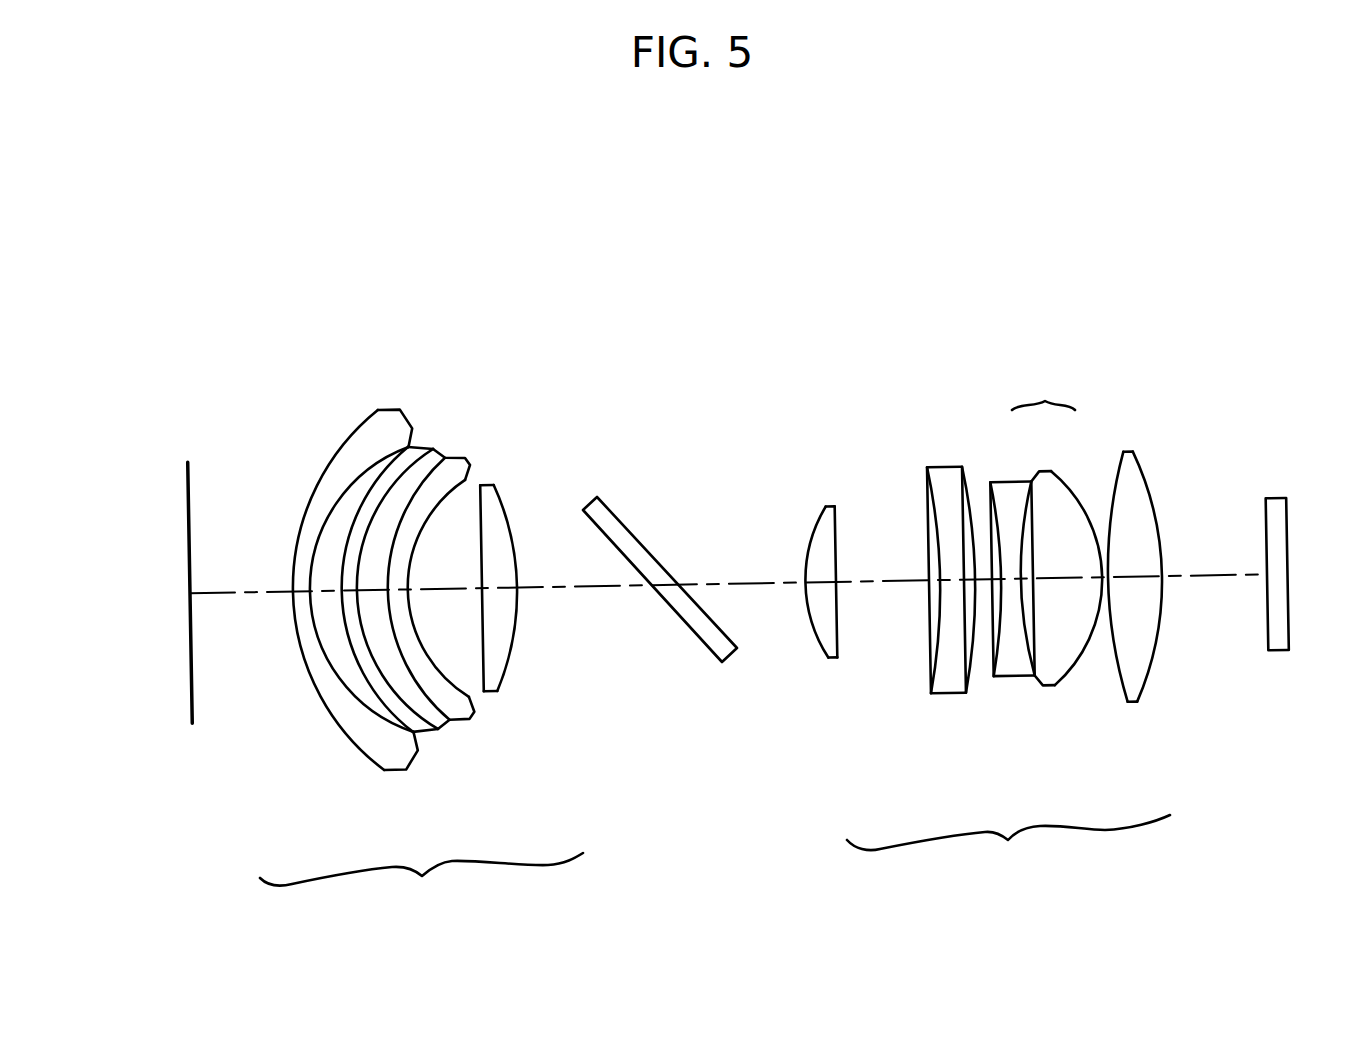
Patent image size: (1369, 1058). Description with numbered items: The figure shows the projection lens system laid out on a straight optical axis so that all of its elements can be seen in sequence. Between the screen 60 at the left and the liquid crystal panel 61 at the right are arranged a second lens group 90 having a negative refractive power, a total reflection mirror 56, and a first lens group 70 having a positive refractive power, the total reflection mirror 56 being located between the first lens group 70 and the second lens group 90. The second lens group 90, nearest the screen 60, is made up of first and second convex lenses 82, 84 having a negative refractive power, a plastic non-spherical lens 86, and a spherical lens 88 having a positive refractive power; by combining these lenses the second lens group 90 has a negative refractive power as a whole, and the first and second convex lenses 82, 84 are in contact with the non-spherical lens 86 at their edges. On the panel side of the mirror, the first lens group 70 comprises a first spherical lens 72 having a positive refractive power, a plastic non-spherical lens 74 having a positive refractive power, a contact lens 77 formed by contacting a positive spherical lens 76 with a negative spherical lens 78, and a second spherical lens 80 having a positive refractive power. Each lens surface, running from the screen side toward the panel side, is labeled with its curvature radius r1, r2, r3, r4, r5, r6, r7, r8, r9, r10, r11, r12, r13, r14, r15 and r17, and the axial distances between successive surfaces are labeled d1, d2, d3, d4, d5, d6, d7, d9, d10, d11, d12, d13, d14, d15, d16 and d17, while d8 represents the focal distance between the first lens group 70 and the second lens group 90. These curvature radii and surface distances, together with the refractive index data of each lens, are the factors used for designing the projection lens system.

The screen 60 is at (187, 522).
The liquid crystal panel 61 is at (1278, 507).
The total reflection mirror 56 is at (638, 532).
The second lens group 90 is at (405, 636).
The first lens group 70 is at (991, 611).
The first convex lens 82 is at (323, 578).
The second convex lens 84 is at (390, 582).
The plastic non-spherical lens 86 is at (445, 580).
The spherical lens 88 is at (529, 547).
The first spherical lens 72 is at (790, 527).
The plastic non-spherical lens 74 is at (909, 589).
The positive spherical lens 76 is at (965, 520).
The contact lens 77 is at (1017, 512).
The negative spherical lens 78 is at (1085, 512).
The second spherical lens 80 is at (1173, 538).
The curvature radius r1 is at (317, 490).
The curvature radius r2 is at (343, 488).
The curvature radius r3 is at (370, 480).
The curvature radius r4 is at (404, 470).
The curvature radius r5 is at (428, 448).
The curvature radius r6 is at (463, 478).
The curvature radius r7 is at (490, 487).
The curvature radius r8 is at (507, 513).
The curvature radius r9 is at (810, 507).
The curvature radius r10 is at (827, 503).
The curvature radius r11 is at (927, 485).
The curvature radius r12 is at (970, 548).
The curvature radius r13 is at (992, 525).
The curvature radius r14 is at (997, 468).
The curvature radius r15 is at (1100, 565).
The curvature radius r17 is at (1128, 480).
The distance between lens surfaces d1 is at (296, 614).
The distance between lens surfaces d2 is at (318, 652).
The distance between lens surfaces d3 is at (335, 688).
The distance between lens surfaces d4 is at (347, 726).
The distance between lens surfaces d5 is at (373, 758).
The distance between lens surfaces d6 is at (452, 600).
The distance between lens surfaces d7 is at (513, 623).
The focal distance between lens groups d8 is at (660, 597).
The distance between lens surfaces d9 is at (826, 596).
The distance between lens surfaces d10 is at (880, 590).
The distance between lens surfaces d11 is at (945, 632).
The distance between lens surfaces d12 is at (1003, 680).
The distance between lens surfaces d13 is at (1048, 682).
The distance between lens surfaces d14 is at (1077, 647).
The distance between lens surfaces d15 is at (1130, 665).
The distance between lens surfaces d16 is at (1152, 622).
The distance between lens surfaces d17 is at (1227, 576).